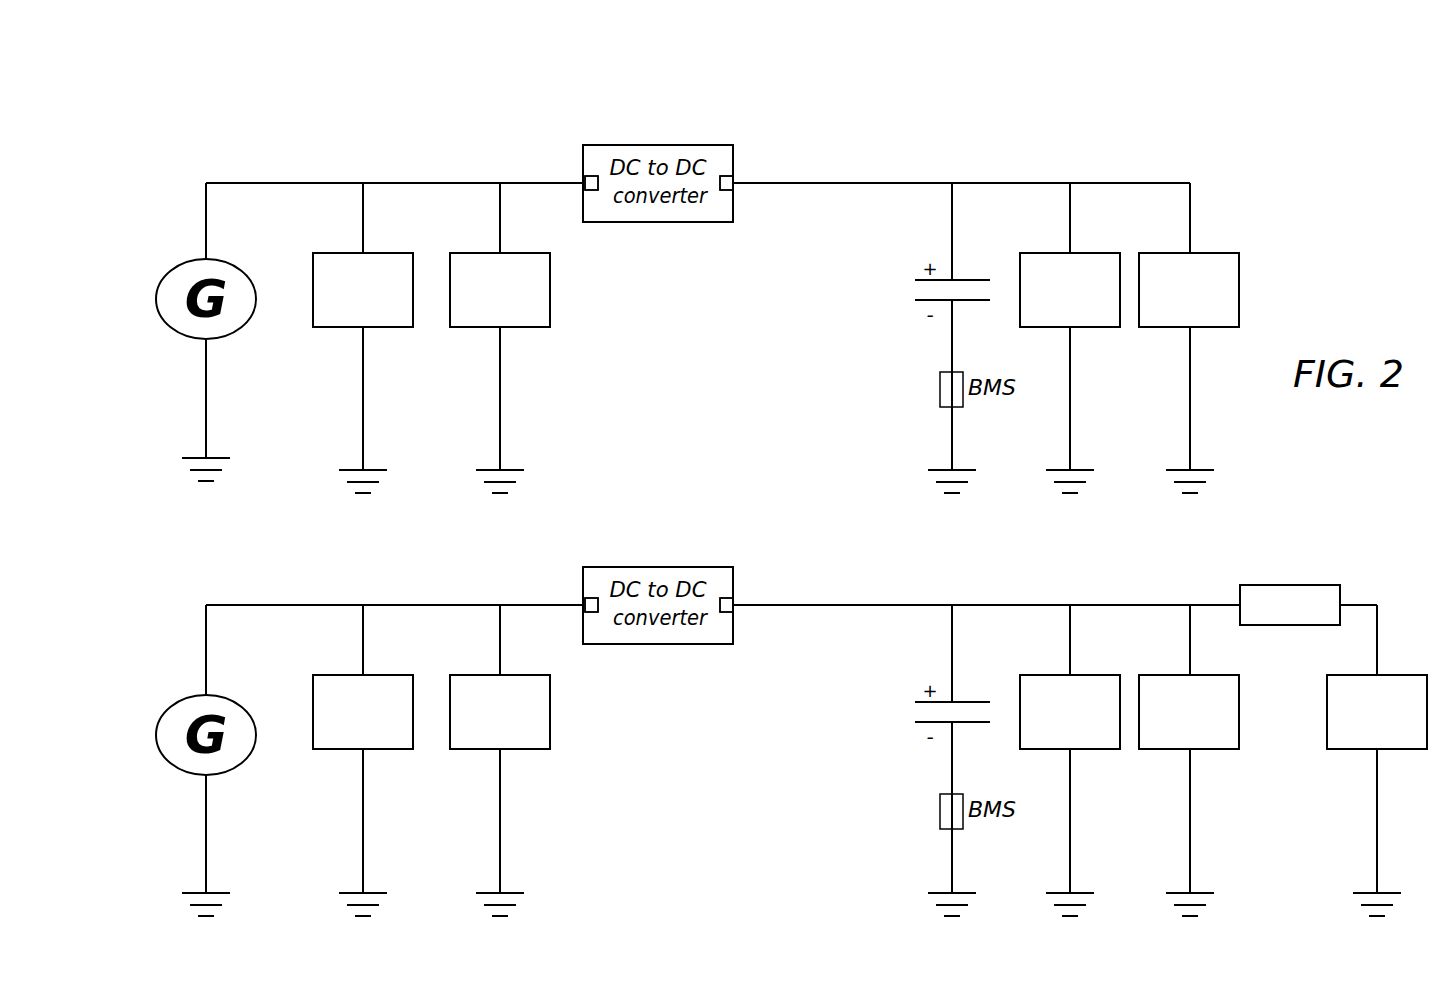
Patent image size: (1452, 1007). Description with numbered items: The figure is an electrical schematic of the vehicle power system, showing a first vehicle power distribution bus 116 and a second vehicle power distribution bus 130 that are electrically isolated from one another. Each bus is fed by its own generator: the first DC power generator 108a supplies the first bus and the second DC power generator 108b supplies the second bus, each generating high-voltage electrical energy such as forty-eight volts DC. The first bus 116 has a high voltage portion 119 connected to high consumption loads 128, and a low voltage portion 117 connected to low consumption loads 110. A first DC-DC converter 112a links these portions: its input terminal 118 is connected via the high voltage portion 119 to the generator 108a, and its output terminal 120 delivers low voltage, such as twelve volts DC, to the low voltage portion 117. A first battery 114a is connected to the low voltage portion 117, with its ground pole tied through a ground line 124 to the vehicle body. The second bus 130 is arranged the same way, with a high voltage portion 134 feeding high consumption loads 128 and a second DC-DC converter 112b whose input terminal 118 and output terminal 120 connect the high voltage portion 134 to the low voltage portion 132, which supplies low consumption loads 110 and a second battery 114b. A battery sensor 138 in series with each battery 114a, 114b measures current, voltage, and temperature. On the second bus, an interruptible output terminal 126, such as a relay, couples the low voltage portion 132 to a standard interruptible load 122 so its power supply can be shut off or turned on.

The first vehicle power distribution bus 116 is at (223, 116).
The second vehicle power distribution bus 130 is at (200, 547).
The first DC power generator 108a is at (183, 263).
The second DC power generator 108b is at (183, 699).
The low consumption load 110 is at (1129, 501).
The first DC-DC converter 112a is at (693, 145).
The second DC-DC converter 112b is at (693, 643).
The first battery 114a is at (916, 279).
The second battery 114b is at (916, 701).
The low voltage portion of first bus 117 is at (833, 182).
The input terminal 118 is at (588, 176).
The high voltage portion of first bus 119 is at (443, 181).
The output terminal 120 is at (729, 176).
The standard interruptible load 122 is at (1377, 712).
The ground line 124 is at (186, 457).
The interruptible output terminal 126 is at (1314, 585).
The high consumption load 128 is at (431, 501).
The low voltage portion of second bus 132 is at (833, 604).
The high voltage portion of second bus 134 is at (305, 603).
The battery sensor 138 is at (940, 385).